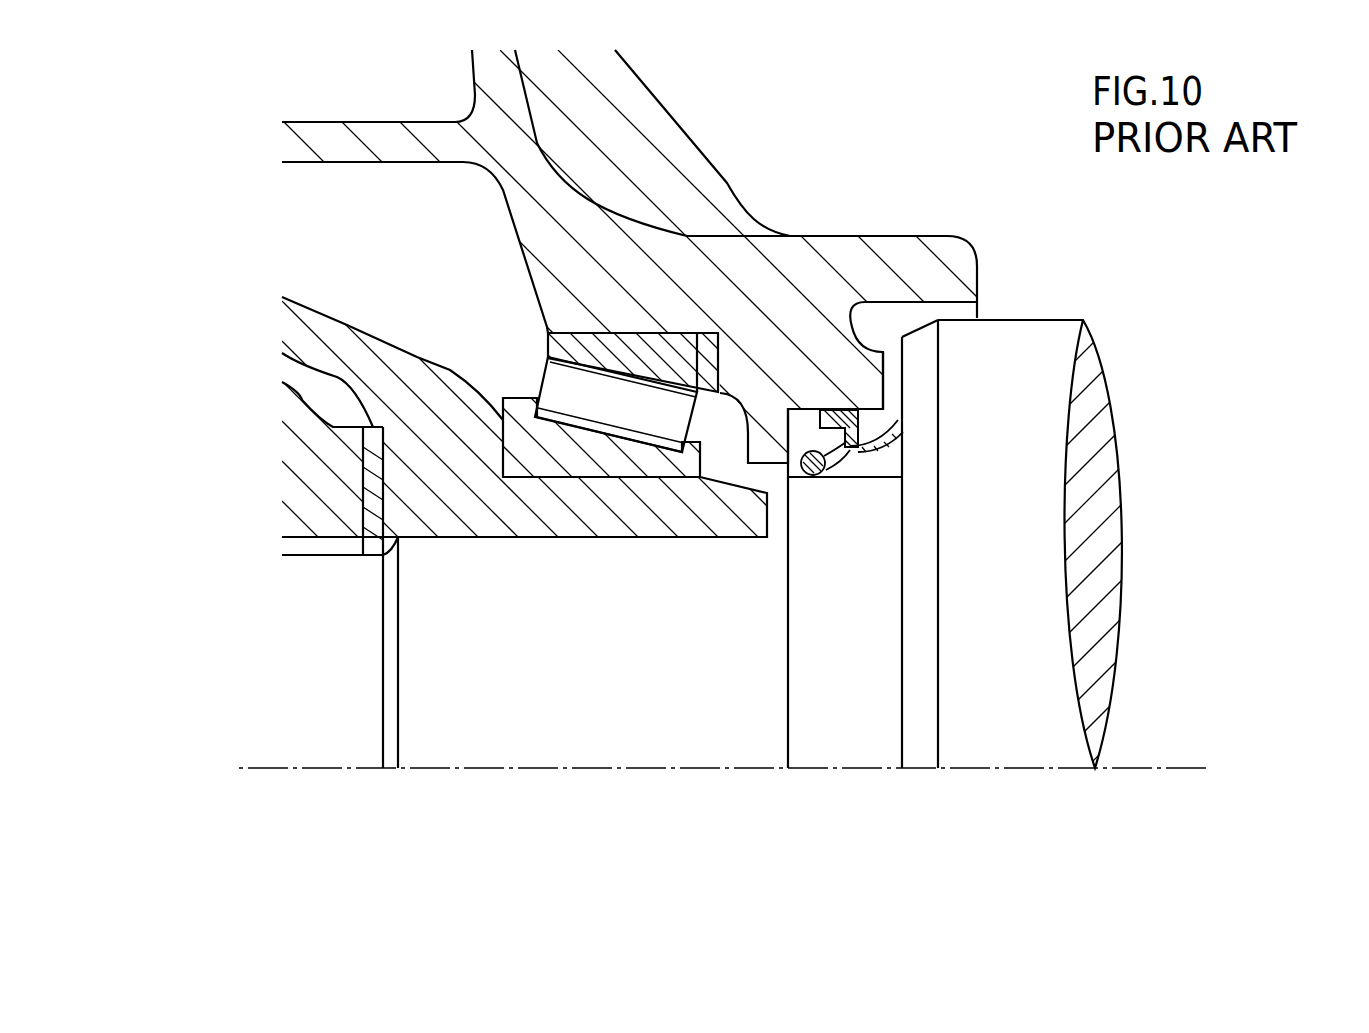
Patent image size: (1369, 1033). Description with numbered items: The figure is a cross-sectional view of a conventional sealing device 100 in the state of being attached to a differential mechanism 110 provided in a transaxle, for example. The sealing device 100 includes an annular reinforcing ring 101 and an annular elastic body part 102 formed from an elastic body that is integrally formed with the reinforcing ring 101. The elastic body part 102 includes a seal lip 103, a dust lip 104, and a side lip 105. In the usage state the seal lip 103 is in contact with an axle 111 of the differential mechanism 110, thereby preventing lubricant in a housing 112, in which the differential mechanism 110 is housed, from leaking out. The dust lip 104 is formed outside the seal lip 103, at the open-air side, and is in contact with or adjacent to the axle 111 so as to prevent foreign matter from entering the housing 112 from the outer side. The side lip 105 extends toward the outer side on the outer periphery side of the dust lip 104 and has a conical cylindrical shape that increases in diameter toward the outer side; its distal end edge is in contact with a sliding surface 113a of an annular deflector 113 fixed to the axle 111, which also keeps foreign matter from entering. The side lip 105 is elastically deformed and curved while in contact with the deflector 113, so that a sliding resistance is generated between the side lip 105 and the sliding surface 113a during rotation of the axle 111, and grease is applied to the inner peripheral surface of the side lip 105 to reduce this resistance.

The sealing device 100 is at (920, 427).
The reinforcing ring 101 is at (833, 414).
The elastic body part 102 is at (807, 425).
The seal lip 103 is at (816, 477).
The dust lip 104 is at (848, 462).
The side lip 105 is at (890, 447).
The differential mechanism 110 is at (303, 268).
The axle 111 is at (851, 705).
The housing 112 is at (878, 248).
The deflector 113 is at (1028, 622).
The sliding surface 113a is at (902, 650).